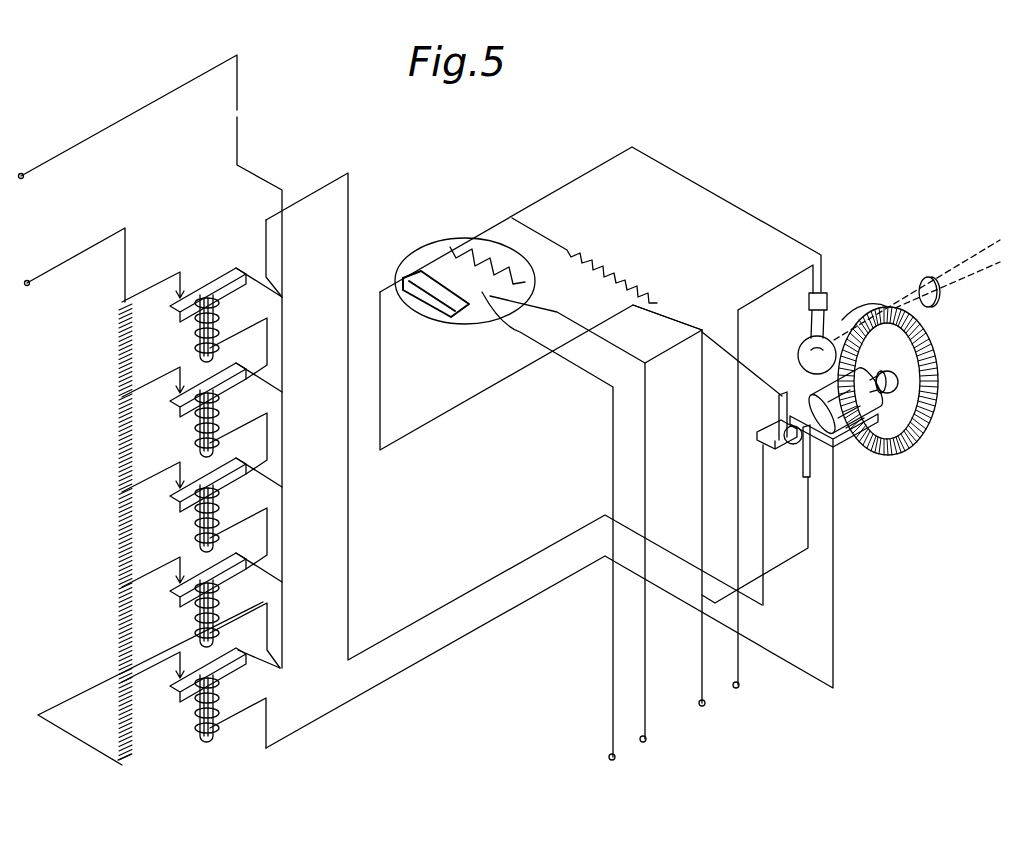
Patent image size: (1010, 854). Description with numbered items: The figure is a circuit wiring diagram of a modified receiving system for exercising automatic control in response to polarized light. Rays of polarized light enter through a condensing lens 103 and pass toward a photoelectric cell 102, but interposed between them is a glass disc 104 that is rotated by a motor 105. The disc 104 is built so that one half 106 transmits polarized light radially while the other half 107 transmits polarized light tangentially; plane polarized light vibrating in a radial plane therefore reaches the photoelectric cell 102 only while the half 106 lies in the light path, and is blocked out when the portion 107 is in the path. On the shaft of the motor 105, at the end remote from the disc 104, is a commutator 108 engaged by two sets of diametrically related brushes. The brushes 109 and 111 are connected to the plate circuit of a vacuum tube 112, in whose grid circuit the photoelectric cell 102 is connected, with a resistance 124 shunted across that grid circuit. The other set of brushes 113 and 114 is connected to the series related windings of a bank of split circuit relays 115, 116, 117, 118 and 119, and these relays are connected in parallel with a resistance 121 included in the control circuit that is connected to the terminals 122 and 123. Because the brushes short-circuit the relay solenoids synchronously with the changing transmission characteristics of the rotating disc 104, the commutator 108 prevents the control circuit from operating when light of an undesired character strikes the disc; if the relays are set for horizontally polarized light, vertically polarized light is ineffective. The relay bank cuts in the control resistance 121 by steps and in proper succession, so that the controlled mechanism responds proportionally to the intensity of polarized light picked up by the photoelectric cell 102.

The photoelectric cell 102 is at (826, 324).
The condensing lens 103 is at (935, 278).
The glass disc 104 is at (905, 410).
The motor 105 is at (847, 413).
The disc half transmitting polarized light radially 106 is at (938, 378).
The disc half transmitting polarized light tangentially 107 is at (870, 311).
The commutator 108 is at (702, 332).
The brush 109 is at (786, 392).
The brush 111 is at (808, 474).
The vacuum tube 112 is at (441, 275).
The brush 113 is at (775, 450).
The brush 114 is at (822, 442).
The split circuit relay 115 is at (200, 324).
The split circuit relay 116 is at (200, 424).
The split circuit relay 117 is at (198, 522).
The split circuit relay 118 is at (198, 610).
The split circuit relay 119 is at (198, 712).
The resistance 121 is at (118, 458).
The terminal 122 is at (75, 268).
The terminal 123 is at (128, 128).
The resistance 124 is at (607, 285).